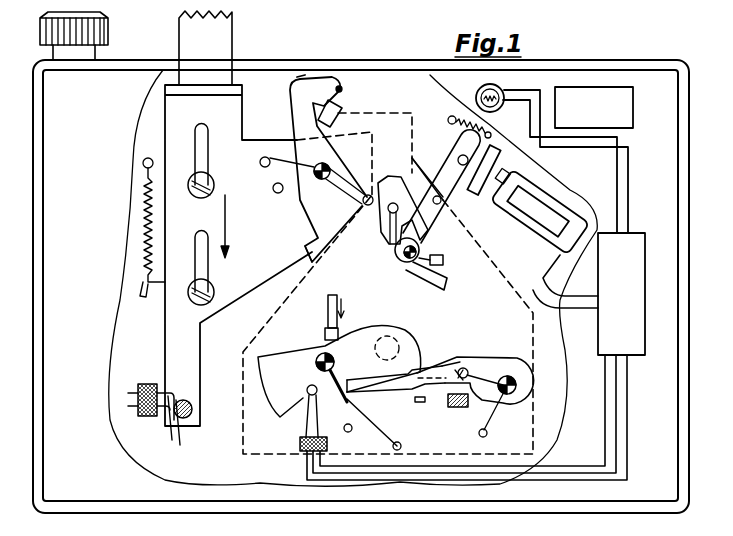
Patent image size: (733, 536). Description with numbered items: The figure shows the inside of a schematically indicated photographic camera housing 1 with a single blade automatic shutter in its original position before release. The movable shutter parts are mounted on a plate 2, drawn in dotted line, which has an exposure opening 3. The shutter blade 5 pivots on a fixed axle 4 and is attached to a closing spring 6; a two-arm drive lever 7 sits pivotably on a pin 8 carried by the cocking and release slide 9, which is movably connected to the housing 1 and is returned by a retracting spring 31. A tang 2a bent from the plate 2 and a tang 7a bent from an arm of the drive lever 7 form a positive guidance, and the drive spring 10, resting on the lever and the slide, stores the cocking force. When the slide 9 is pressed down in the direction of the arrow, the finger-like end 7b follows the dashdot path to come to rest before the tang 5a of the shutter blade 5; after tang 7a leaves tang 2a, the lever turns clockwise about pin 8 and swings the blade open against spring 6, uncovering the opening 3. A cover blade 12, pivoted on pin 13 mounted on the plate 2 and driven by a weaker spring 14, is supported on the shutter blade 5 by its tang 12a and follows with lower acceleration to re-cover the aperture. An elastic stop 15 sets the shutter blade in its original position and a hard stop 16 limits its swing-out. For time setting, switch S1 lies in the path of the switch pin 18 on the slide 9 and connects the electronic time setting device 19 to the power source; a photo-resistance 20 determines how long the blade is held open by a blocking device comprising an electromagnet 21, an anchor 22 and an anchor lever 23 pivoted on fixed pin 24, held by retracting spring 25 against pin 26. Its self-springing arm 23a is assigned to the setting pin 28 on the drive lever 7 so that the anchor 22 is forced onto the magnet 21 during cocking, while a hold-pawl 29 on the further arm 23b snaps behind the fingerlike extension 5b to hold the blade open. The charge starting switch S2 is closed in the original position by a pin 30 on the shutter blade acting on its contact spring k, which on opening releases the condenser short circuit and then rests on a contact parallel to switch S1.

The housing 1 is at (612, 63).
The plate 2 is at (522, 352).
The tang 2a is at (336, 111).
The exposure opening 3 is at (390, 340).
The fixed axle 4 is at (316, 362).
The shutter blade 5 is at (419, 350).
The tang 5a is at (327, 303).
The fingerlike extension 5b is at (446, 378).
The closing spring 6 is at (378, 431).
The drive lever 7 is at (305, 214).
The tang 7a is at (340, 88).
The finger-like end 7b is at (306, 250).
The pin 8 is at (318, 165).
The cocking and release slide 9 is at (172, 126).
The drive spring 10 is at (283, 168).
The cover blade 12 is at (481, 366).
The tang 12a is at (420, 404).
The pin 13 is at (510, 386).
The spring 14 is at (496, 412).
The stop 15 is at (457, 409).
The stop 16 is at (350, 432).
The switch pin 18 is at (186, 419).
The electronic time setting device 19 is at (628, 247).
The photo-resistance 20 is at (500, 93).
The electromagnet 21 is at (535, 199).
The anchor 22 is at (484, 173).
The anchor lever 23 is at (450, 213).
The self-springing arm 23a is at (383, 180).
The arm 23b is at (446, 283).
The fixed pin 24 is at (400, 259).
The retracting spring 25 is at (469, 123).
The pin 26 is at (437, 196).
The setting pin 28 is at (362, 204).
The hold-pawl 29 is at (445, 262).
The pin 30 is at (346, 397).
The retracting spring 31 is at (148, 211).
The contact spring k is at (307, 390).
The switch S1 is at (164, 432).
The charge starting switch S2 is at (298, 420).